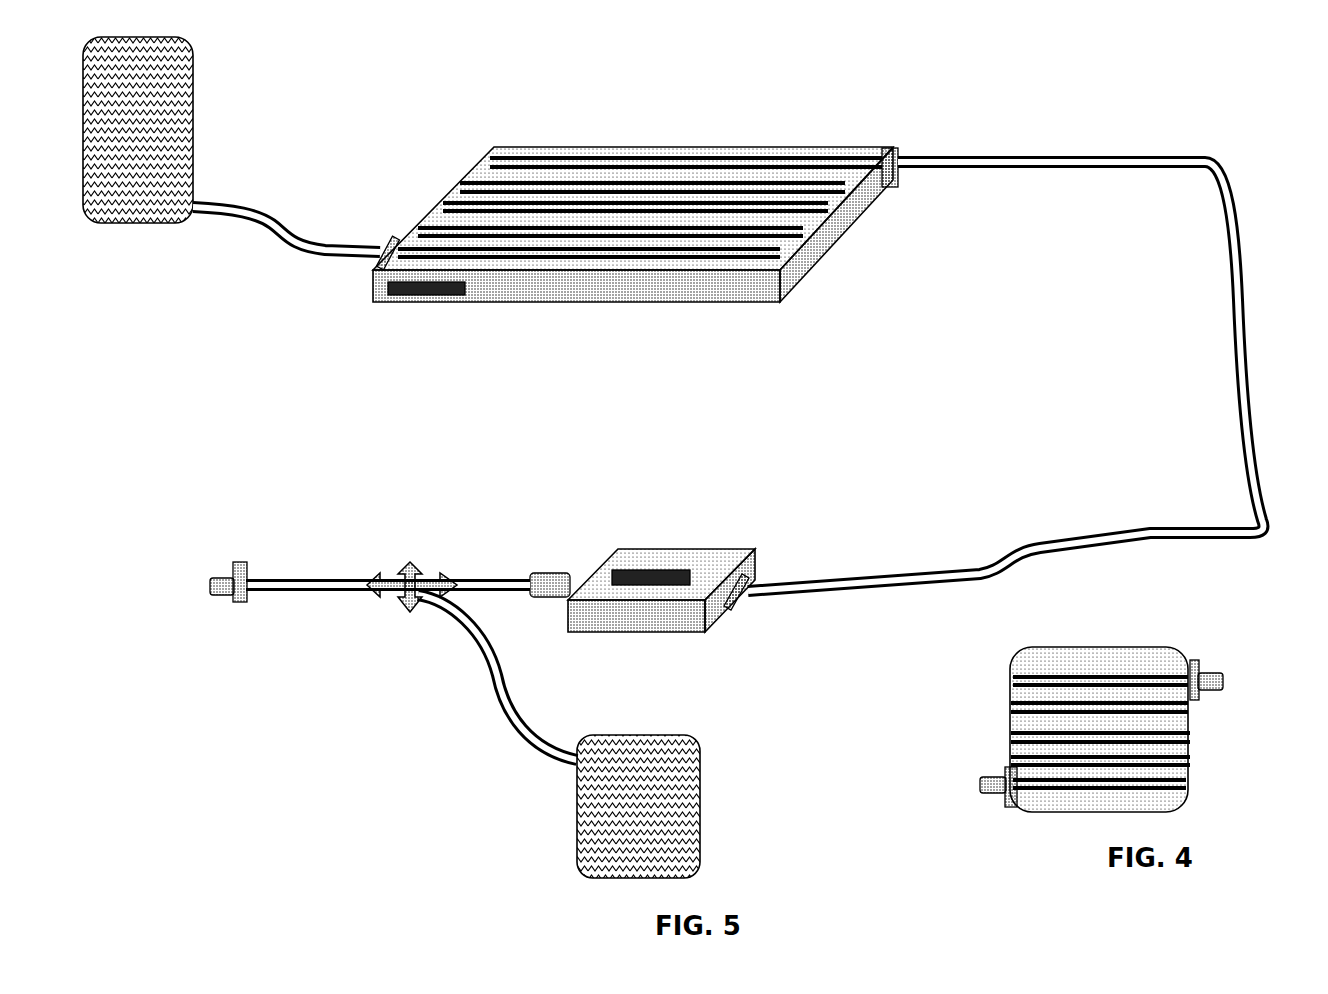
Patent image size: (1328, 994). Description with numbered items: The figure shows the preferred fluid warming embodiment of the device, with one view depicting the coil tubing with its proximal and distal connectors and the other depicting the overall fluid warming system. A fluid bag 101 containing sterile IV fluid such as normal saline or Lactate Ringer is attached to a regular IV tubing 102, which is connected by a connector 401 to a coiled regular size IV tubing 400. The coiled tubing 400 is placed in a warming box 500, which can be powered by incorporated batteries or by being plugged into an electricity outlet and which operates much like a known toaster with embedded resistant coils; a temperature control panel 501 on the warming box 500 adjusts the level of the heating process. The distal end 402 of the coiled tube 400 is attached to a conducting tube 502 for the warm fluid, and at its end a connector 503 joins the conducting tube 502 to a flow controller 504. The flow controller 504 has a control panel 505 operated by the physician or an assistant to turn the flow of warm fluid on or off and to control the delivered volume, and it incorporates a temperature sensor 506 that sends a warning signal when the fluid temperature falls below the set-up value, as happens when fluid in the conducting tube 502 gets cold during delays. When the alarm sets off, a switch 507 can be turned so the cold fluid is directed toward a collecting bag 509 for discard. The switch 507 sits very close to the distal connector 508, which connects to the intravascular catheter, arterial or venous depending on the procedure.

In FIG. 5, the fluid bag 101 is at (178, 146).
In FIG. 5, the IV tubing 102 is at (280, 231).
In FIG. 5, the coiled IV tubing 400 is at (612, 210).
In FIG. 4, the coiled IV tubing 400 is at (1107, 756).
In FIG. 5, the connector 401 is at (373, 258).
In FIG. 4, the connector 401 is at (975, 790).
In FIG. 5, the distal end 402 is at (889, 150).
In FIG. 4, the distal end 402 is at (1225, 680).
In FIG. 5, the warming box 500 is at (557, 261).
In FIG. 5, the temperature control panel 501 is at (405, 302).
In FIG. 5, the conducting tube 502 is at (1022, 157).
In FIG. 5, the connector 503 is at (770, 595).
In FIG. 5, the flow controller 504 is at (712, 539).
In FIG. 5, the control panel 505 is at (627, 575).
In FIG. 5, the temperature sensor 506 is at (553, 588).
In FIG. 5, the switch 507 is at (402, 580).
In FIG. 5, the distal connector 508 is at (222, 594).
In FIG. 5, the collecting bag 509 is at (648, 800).